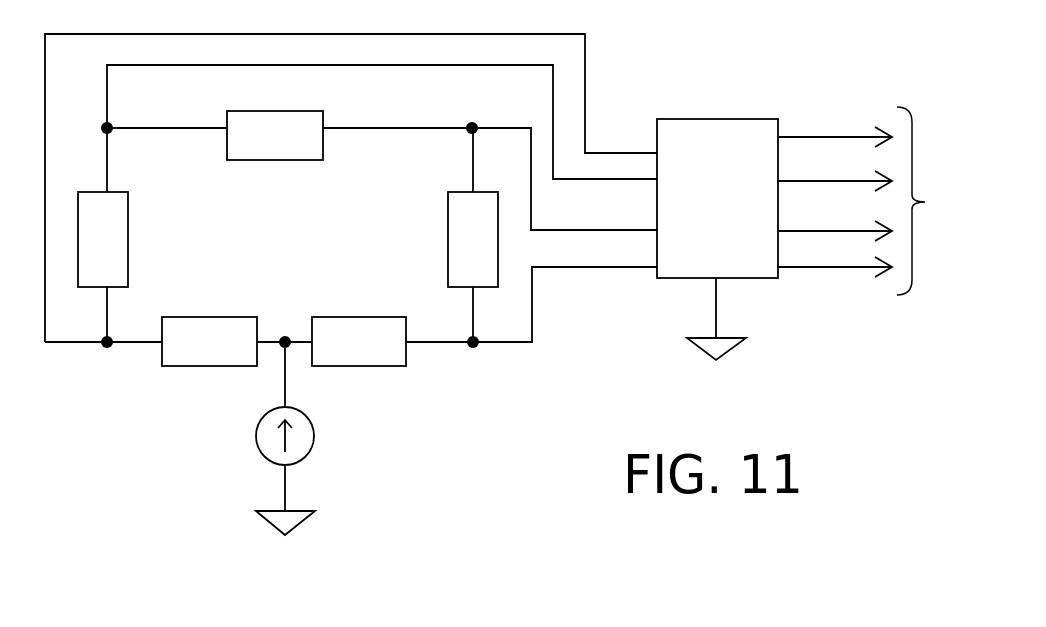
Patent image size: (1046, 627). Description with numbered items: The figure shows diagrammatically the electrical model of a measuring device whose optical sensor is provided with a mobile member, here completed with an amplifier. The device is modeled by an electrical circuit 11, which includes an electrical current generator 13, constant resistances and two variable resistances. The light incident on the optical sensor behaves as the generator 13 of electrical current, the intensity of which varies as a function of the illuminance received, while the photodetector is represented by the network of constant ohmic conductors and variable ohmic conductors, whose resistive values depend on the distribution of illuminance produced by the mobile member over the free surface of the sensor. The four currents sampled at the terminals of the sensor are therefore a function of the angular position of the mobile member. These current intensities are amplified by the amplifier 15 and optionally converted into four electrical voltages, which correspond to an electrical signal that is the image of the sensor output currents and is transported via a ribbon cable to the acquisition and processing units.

The electrical circuit 11 is at (105, 463).
The electrical current generator 13 is at (308, 418).
The amplifier 15 is at (687, 119).